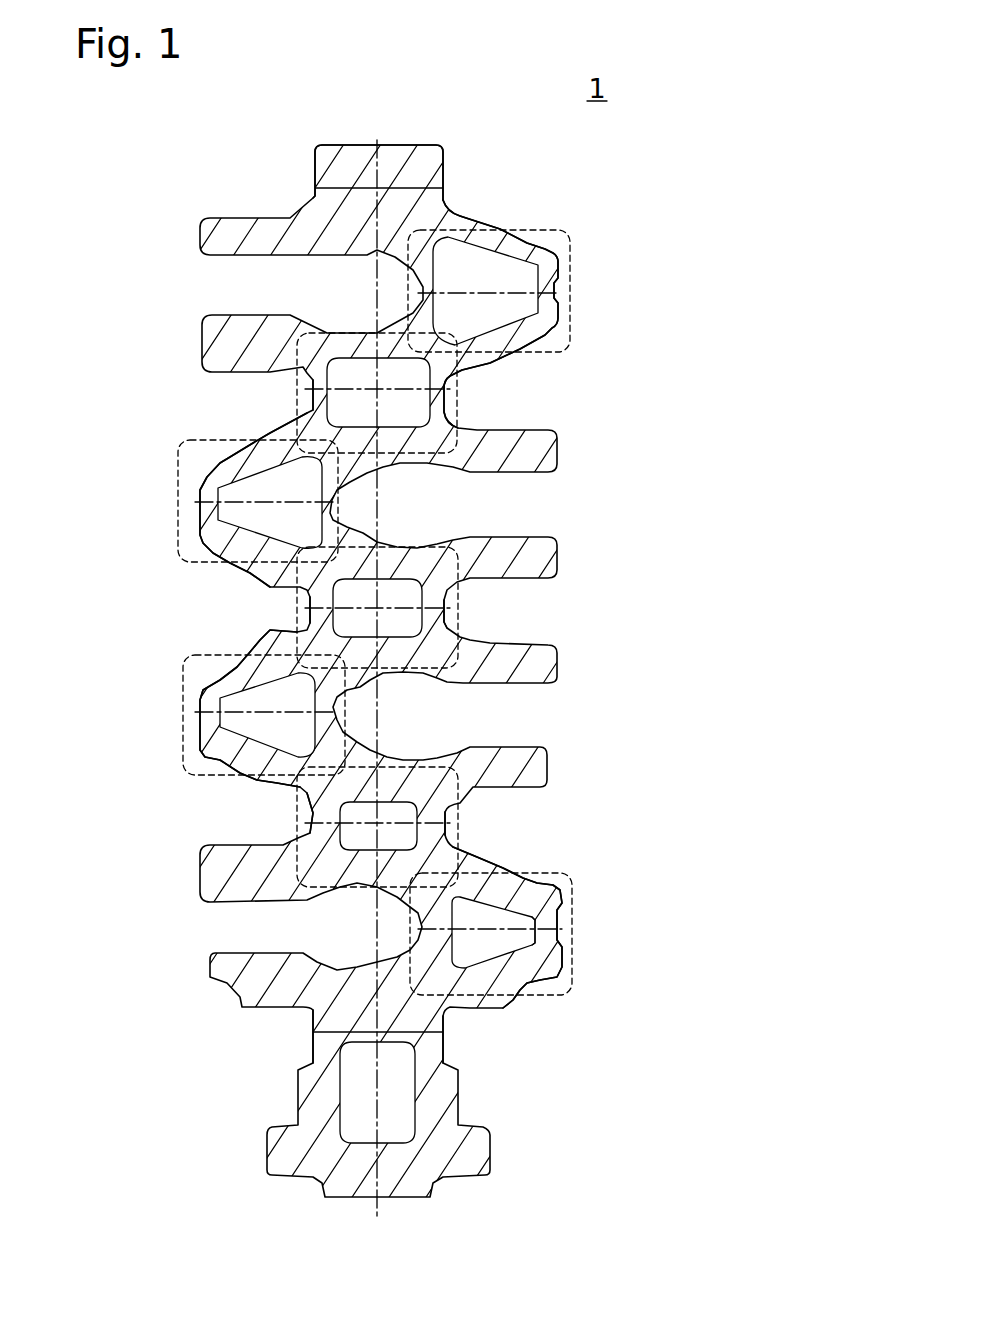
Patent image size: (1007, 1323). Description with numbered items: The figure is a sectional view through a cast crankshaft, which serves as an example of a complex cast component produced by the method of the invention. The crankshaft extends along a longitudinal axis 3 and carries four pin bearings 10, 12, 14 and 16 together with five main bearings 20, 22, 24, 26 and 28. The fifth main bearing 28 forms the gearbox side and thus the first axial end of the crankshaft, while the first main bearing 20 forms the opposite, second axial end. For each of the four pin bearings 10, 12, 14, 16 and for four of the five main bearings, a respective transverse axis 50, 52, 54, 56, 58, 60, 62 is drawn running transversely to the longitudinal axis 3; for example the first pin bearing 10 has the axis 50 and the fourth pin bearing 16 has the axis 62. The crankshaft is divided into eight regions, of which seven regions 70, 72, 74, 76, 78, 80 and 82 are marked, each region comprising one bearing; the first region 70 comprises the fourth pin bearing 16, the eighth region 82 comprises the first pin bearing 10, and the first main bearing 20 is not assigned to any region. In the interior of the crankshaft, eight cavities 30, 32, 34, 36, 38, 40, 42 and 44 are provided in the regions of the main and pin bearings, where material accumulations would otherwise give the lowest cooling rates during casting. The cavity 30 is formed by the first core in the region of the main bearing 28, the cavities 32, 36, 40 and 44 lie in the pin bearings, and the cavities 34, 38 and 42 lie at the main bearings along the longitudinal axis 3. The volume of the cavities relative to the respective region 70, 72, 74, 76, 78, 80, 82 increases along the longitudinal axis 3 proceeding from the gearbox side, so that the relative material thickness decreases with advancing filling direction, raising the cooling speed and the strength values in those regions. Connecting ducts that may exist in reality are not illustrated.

The longitudinal axis 3 is at (375, 178).
The first pin bearing 10 is at (555, 282).
The second pin bearing 12 is at (200, 490).
The third pin bearing 14 is at (202, 702).
The fourth pin bearing 16 is at (555, 937).
The first main bearing 20 is at (447, 195).
The second main bearing 22 is at (313, 410).
The third main bearing 24 is at (444, 598).
The fourth main bearing 26 is at (313, 813).
The fifth main bearing 28 is at (447, 1048).
The cavity 30 is at (352, 1102).
The cavity 32 is at (515, 925).
The cavity 34 is at (443, 842).
The cavity 36 is at (237, 722).
The cavity 38 is at (385, 592).
The cavity 40 is at (248, 517).
The cavity 42 is at (355, 373).
The cavity 44 is at (508, 310).
The axis 50 is at (528, 293).
The axis 52 is at (417, 390).
The axis 54 is at (203, 502).
The axis 56 is at (415, 610).
The axis 58 is at (197, 710).
The axis 60 is at (402, 835).
The axis 62 is at (503, 930).
The first region 70 is at (573, 893).
The second region 72 is at (460, 805).
The third region 74 is at (197, 655).
The fourth region 76 is at (452, 558).
The fifth region 78 is at (190, 442).
The sixth region 80 is at (457, 415).
The eighth region 82 is at (530, 232).